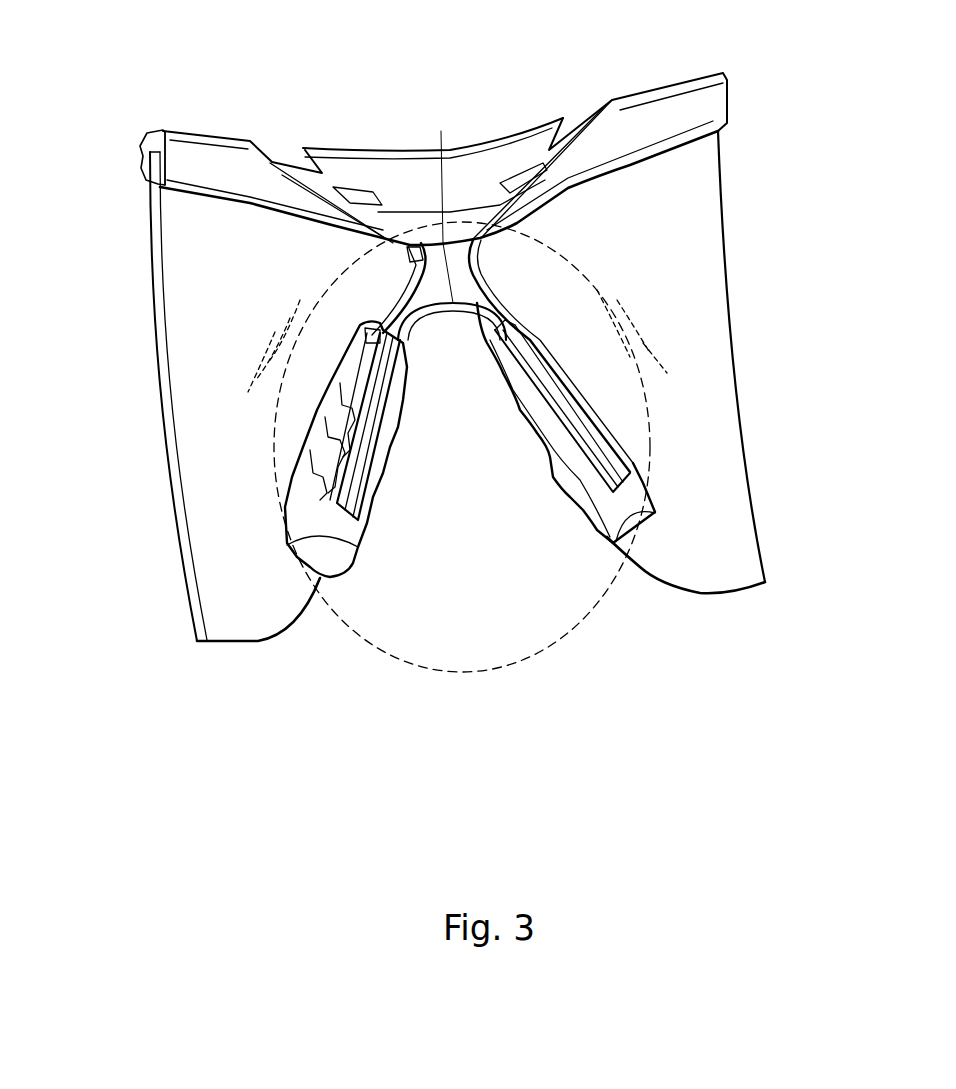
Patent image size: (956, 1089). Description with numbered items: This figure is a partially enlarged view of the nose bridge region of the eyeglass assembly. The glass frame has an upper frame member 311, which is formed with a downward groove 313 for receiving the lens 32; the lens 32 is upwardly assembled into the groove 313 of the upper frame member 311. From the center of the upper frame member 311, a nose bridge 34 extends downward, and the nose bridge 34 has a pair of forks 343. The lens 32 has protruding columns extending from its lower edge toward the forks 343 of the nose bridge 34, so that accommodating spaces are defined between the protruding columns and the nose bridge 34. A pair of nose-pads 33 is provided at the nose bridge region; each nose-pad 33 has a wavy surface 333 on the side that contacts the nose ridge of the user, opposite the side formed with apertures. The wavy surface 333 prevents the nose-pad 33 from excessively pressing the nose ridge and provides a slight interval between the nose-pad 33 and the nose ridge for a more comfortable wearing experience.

The upper frame member 311 is at (667, 107).
The downward groove 313 is at (138, 162).
The lens 32 is at (707, 263).
The nose-pad 33 is at (292, 449).
The wavy surface 333 is at (578, 483).
The forks 343 is at (371, 448).
The nose bridge 34 is at (541, 668).